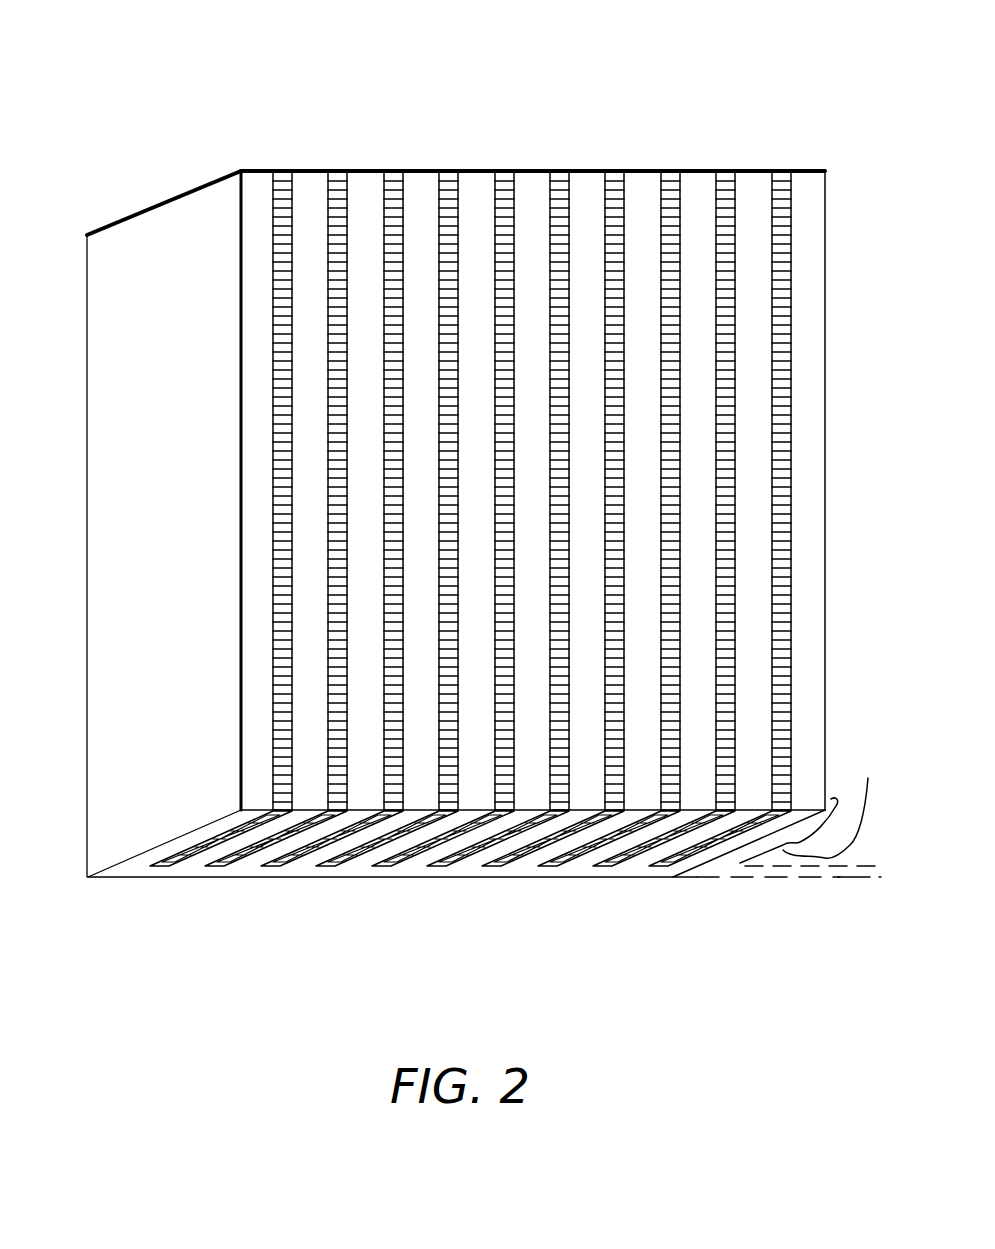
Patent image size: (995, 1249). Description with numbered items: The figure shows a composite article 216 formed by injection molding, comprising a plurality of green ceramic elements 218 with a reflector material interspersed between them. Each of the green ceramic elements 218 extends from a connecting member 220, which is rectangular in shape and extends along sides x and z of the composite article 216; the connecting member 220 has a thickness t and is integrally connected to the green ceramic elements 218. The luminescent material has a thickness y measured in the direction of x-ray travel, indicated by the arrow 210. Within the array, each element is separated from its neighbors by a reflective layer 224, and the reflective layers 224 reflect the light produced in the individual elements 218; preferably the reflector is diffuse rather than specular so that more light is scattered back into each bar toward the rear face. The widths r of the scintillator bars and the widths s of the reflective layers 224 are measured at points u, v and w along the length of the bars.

The composite article 216 is at (505, 46).
The arrow indicating direction of x-ray travel 210 is at (806, 772).
The green ceramic elements 218 is at (423, 183).
The reflective layer 224 is at (507, 183).
The connecting member 220 is at (192, 865).